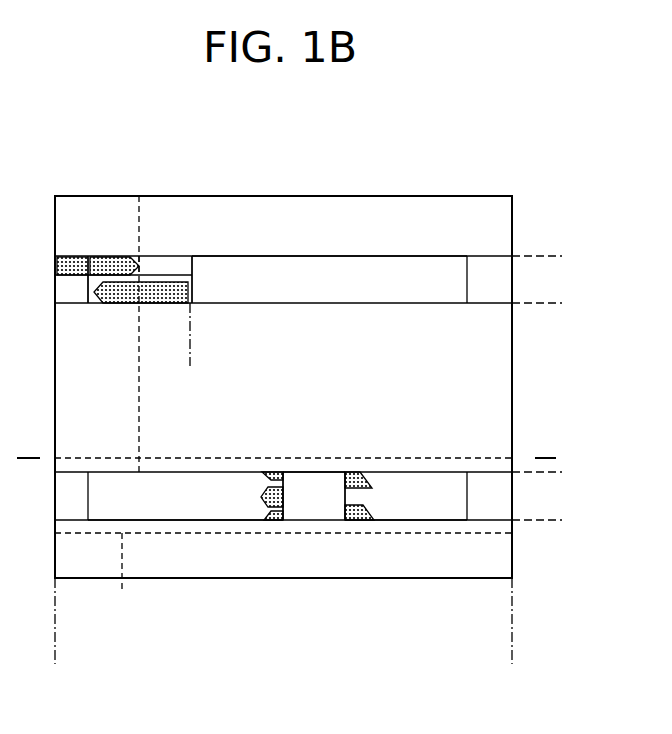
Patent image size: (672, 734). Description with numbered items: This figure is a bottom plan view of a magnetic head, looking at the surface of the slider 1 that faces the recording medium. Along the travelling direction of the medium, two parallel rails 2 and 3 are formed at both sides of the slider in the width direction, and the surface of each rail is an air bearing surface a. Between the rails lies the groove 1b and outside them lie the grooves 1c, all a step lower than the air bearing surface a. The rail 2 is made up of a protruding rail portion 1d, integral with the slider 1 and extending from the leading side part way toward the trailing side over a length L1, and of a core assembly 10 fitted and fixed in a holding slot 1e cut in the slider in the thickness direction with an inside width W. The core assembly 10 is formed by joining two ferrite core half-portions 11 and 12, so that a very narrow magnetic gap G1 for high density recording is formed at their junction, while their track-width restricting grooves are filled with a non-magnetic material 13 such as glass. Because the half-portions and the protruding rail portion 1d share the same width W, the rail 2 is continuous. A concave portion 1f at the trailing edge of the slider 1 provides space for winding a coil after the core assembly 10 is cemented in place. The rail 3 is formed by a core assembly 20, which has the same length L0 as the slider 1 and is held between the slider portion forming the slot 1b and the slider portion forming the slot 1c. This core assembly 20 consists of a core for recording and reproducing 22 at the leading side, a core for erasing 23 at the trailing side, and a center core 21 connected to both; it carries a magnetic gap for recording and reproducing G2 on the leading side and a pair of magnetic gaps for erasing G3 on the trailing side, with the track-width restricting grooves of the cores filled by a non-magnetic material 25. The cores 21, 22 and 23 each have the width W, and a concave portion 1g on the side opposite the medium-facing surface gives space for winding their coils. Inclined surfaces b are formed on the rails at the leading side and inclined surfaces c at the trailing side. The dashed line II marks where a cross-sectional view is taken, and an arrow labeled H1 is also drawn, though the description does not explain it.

The slider 1 is at (285, 194).
The groove 1b is at (512, 382).
The groove 1c is at (493, 238).
The protruding rail portion 1d is at (333, 272).
The holding slot 1e is at (151, 256).
The concave portion 1f is at (138, 392).
The concave portion 1g is at (123, 577).
The rail 2 is at (426, 252).
The rail 3 is at (449, 540).
The core assembly 10 is at (119, 245).
The core half-portion 11 is at (89, 304).
The core half-portion 12 is at (181, 262).
The non-magnetic material 13 is at (99, 255).
The core assembly 20 is at (359, 540).
The center core 21 is at (309, 505).
The core for recording and reproducing 22 is at (396, 505).
The core for erasing 23 is at (166, 508).
The non-magnetic material 25 is at (264, 476).
The magnetic gap G1 is at (126, 277).
The magnetic gap for recording and reproducing G2 is at (346, 490).
The magnetic gaps for erasing G3 is at (285, 484).
The head direction H1 is at (527, 211).
The width W is at (546, 264).
The length L0 is at (63, 647).
The length L1 is at (503, 353).
The ABS surface a is at (352, 289).
The inclined surfaces b is at (488, 289).
The inclined surfaces c is at (68, 289).
The line II— II is at (17, 448).